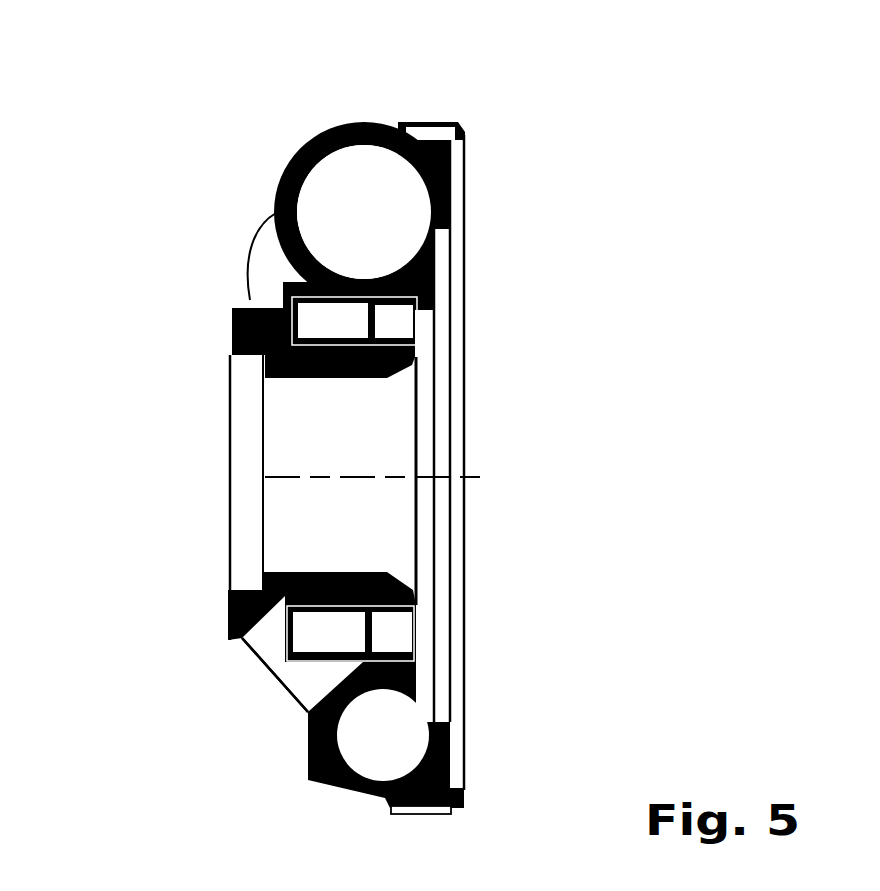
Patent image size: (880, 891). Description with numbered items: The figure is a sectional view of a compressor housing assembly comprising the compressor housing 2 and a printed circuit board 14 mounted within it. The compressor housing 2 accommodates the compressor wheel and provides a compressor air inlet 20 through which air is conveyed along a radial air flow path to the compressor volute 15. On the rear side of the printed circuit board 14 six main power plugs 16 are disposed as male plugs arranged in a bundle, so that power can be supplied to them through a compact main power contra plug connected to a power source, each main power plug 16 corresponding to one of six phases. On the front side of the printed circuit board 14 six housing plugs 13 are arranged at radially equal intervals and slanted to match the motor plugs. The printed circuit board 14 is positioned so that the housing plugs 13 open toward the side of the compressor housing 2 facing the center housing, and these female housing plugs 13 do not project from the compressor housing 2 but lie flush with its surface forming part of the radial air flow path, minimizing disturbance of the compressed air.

The compressor housing 2 is at (460, 810).
The housing plugs 13 is at (400, 612).
The printed circuit board 14 is at (295, 613).
The compressor volute 15 is at (369, 167).
The main power plugs 16 is at (272, 683).
The compressor air inlet 20 is at (212, 548).